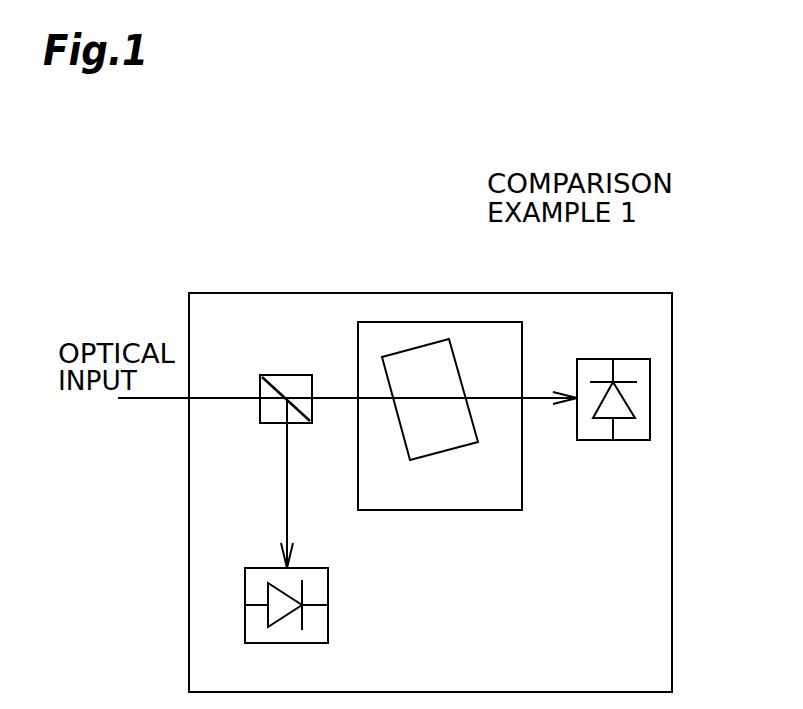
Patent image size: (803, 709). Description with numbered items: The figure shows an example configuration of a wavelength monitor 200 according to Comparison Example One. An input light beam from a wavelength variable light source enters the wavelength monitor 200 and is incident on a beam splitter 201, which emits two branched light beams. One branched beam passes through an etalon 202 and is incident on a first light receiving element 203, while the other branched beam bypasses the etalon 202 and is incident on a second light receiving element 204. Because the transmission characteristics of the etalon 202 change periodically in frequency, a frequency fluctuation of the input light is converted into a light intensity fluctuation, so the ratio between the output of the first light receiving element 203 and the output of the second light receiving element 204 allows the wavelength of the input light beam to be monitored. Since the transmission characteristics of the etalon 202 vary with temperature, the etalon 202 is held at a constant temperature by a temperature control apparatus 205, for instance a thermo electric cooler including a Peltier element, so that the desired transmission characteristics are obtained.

The wavelength monitor 200 is at (773, 259).
The beam splitter 201 is at (292, 375).
The etalon 202 is at (412, 350).
The first light receiving element 203 is at (650, 413).
The second light receiving element 204 is at (328, 624).
The temperature control apparatus 205 is at (437, 510).